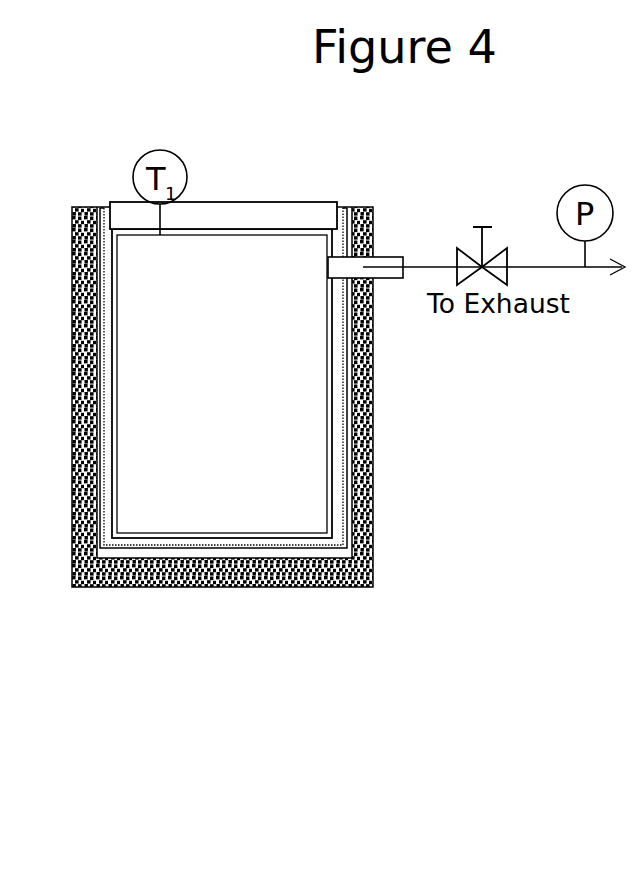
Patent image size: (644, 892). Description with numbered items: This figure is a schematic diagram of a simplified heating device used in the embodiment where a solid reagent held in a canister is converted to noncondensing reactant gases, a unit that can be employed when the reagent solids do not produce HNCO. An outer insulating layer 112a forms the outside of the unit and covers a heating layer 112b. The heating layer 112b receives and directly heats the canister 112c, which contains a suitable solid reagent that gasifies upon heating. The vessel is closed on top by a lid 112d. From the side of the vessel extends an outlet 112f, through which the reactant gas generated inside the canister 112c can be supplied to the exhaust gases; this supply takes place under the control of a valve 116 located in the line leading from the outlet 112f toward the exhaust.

The outer insulating layer 112a is at (373, 502).
The heating layer 112b is at (345, 343).
The canister 112c is at (222, 383).
The lid 112d is at (197, 222).
The outlet 112f is at (382, 258).
The valve 116 is at (483, 224).